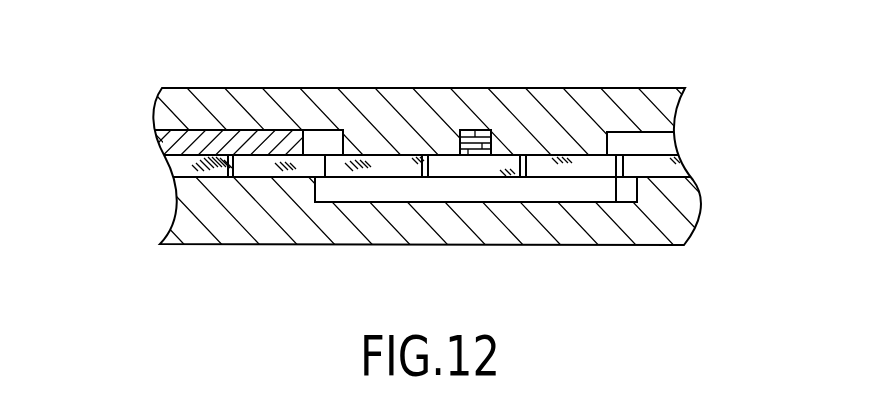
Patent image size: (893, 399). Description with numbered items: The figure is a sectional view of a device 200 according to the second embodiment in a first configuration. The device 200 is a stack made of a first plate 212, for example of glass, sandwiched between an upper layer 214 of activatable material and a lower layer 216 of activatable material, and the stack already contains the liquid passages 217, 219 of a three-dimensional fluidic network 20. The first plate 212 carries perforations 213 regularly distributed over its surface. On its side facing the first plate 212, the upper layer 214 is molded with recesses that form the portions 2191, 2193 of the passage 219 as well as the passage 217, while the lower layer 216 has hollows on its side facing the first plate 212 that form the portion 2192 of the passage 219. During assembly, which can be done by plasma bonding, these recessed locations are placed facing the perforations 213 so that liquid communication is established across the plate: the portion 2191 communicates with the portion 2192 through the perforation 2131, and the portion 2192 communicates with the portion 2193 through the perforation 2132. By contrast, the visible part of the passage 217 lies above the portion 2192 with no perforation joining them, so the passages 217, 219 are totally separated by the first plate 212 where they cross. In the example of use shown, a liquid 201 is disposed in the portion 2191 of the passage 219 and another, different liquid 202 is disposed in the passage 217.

The device 200 is at (137, 68).
The three-dimensional fluidic network 20 is at (288, 207).
The liquid 201 is at (233, 130).
The liquid 202 is at (472, 132).
The first plate 212 is at (683, 163).
The perforations 213 is at (210, 163).
The perforation 2131 is at (332, 178).
The perforation 2132 is at (618, 177).
The upper layer of activatable material 214 is at (670, 107).
The lower layer of activatable material 216 is at (677, 215).
The liquid passage 217 is at (478, 134).
The liquid passage 219 is at (305, 128).
The portion of passage 219 2191 is at (318, 140).
The portion of passage 219 2192 is at (436, 191).
The portion of passage 219 2193 is at (639, 146).